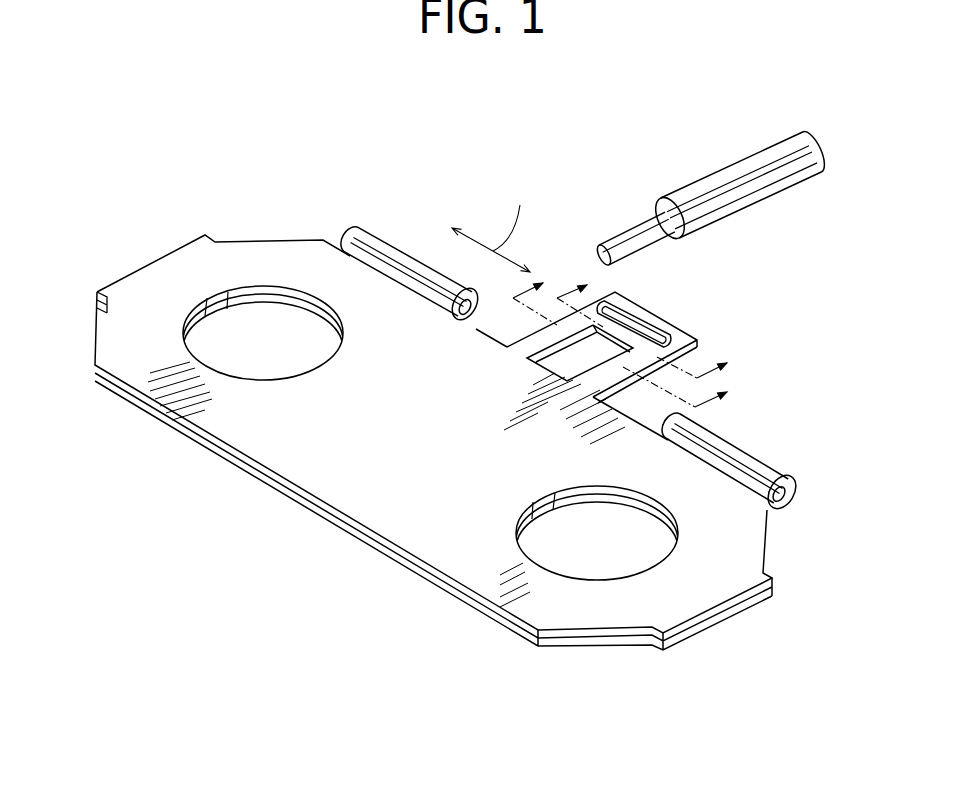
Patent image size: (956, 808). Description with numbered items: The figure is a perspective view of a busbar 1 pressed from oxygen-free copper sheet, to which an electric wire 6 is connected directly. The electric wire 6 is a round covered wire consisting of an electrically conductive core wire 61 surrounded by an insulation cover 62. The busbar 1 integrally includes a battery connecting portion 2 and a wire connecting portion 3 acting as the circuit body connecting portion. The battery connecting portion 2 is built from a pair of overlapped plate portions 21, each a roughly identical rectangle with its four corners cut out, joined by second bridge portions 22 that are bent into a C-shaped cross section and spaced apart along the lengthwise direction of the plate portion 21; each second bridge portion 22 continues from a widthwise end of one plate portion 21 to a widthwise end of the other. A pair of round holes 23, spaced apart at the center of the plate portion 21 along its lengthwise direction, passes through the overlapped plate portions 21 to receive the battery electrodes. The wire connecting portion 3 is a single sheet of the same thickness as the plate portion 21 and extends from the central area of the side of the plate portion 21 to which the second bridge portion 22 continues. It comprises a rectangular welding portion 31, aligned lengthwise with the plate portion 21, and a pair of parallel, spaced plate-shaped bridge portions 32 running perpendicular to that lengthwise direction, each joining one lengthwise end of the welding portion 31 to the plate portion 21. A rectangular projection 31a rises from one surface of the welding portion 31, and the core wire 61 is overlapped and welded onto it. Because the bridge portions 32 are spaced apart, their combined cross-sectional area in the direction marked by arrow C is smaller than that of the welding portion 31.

The busbar 1 is at (268, 217).
The battery connecting portion 2 is at (270, 488).
The plate portion 21 is at (400, 523).
The second bridge portion 22 is at (394, 236).
The hole 23 is at (208, 366).
The wire connecting portion 3 is at (690, 331).
The welding portion 31 is at (660, 322).
The projection 31a is at (620, 313).
The bridge portion 32 is at (597, 378).
The electric wire 6 is at (713, 175).
The core wire 61 is at (636, 225).
The insulation cover 62 is at (763, 150).